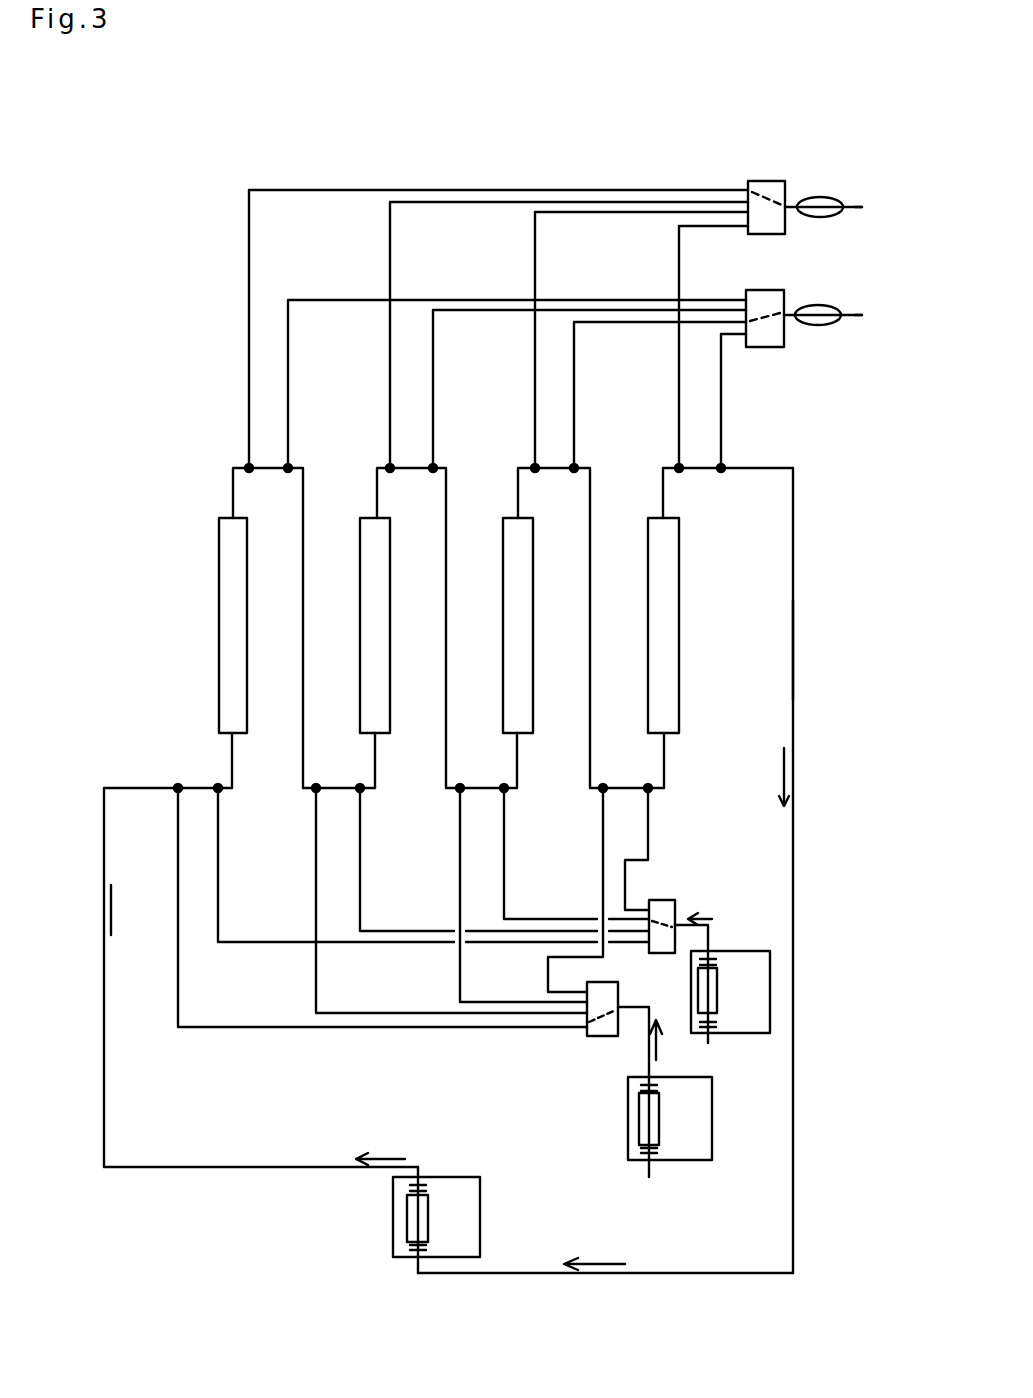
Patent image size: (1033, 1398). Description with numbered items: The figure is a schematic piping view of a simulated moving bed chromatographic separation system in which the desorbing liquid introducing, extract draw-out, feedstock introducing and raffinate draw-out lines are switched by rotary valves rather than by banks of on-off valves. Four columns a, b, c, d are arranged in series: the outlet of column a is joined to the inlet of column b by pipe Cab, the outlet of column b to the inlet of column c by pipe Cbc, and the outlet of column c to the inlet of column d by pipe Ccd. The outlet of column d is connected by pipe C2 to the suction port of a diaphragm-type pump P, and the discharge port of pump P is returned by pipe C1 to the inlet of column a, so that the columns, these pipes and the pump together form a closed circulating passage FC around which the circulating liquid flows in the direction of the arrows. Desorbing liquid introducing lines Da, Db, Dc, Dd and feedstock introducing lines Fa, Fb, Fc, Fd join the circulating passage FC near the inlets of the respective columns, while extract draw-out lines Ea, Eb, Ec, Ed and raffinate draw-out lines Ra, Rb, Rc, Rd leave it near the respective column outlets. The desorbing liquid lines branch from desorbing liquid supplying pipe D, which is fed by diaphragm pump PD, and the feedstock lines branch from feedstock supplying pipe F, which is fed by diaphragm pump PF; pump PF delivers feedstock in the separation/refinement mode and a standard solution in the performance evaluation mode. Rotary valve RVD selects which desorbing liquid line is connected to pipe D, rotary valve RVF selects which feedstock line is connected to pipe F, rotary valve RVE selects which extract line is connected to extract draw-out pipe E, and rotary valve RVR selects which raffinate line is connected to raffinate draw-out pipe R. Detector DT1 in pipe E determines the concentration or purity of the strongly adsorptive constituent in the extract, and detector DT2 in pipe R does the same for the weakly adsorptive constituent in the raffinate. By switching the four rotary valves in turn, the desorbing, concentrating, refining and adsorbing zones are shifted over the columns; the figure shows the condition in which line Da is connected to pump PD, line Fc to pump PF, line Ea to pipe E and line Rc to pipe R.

The rotary valve RVE is at (766, 196).
The detector DT1 is at (820, 197).
The extract draw-out pipe E is at (856, 206).
The rotary valve RVR is at (764, 304).
The detector DT2 is at (814, 305).
The raffinate draw-out pipe R is at (848, 312).
The extract draw-out line Ea is at (249, 343).
The extract draw-out line Eb is at (390, 378).
The extract draw-out line Ec is at (535, 345).
The extract draw-out line Ed is at (679, 345).
The raffinate draw-out line Ra is at (288, 340).
The raffinate draw-out line Rb is at (433, 392).
The raffinate draw-out line Rc is at (574, 390).
The raffinate draw-out line Rd is at (721, 384).
The pipe Cab is at (303, 505).
The pipe Cbc is at (446, 505).
The pipe Ccd is at (590, 505).
The column a is at (225, 598).
The column b is at (373, 596).
The column c is at (514, 598).
The column d is at (660, 596).
The circulating passage FC is at (786, 548).
The pipe C2 is at (793, 637).
The feedstock introducing line Fa is at (218, 858).
The feedstock introducing line Fb is at (360, 858).
The feedstock introducing line Fc is at (504, 857).
The feedstock introducing line Fd is at (648, 846).
The desorbing liquid introducing line Da is at (178, 982).
The desorbing liquid introducing line Db is at (316, 983).
The desorbing liquid introducing line Dc is at (460, 975).
The desorbing liquid introducing line Dd is at (604, 850).
The rotary valve RVF is at (665, 900).
The rotary valve RVD is at (604, 1032).
The feedstock supplying pipe F is at (708, 941).
The desorbing liquid supplying pipe D is at (636, 1012).
The feedstock pump PF is at (712, 1005).
The desorbing liquid pump PD is at (652, 1125).
The pump P is at (415, 1222).
The pipe C1 is at (337, 1170).